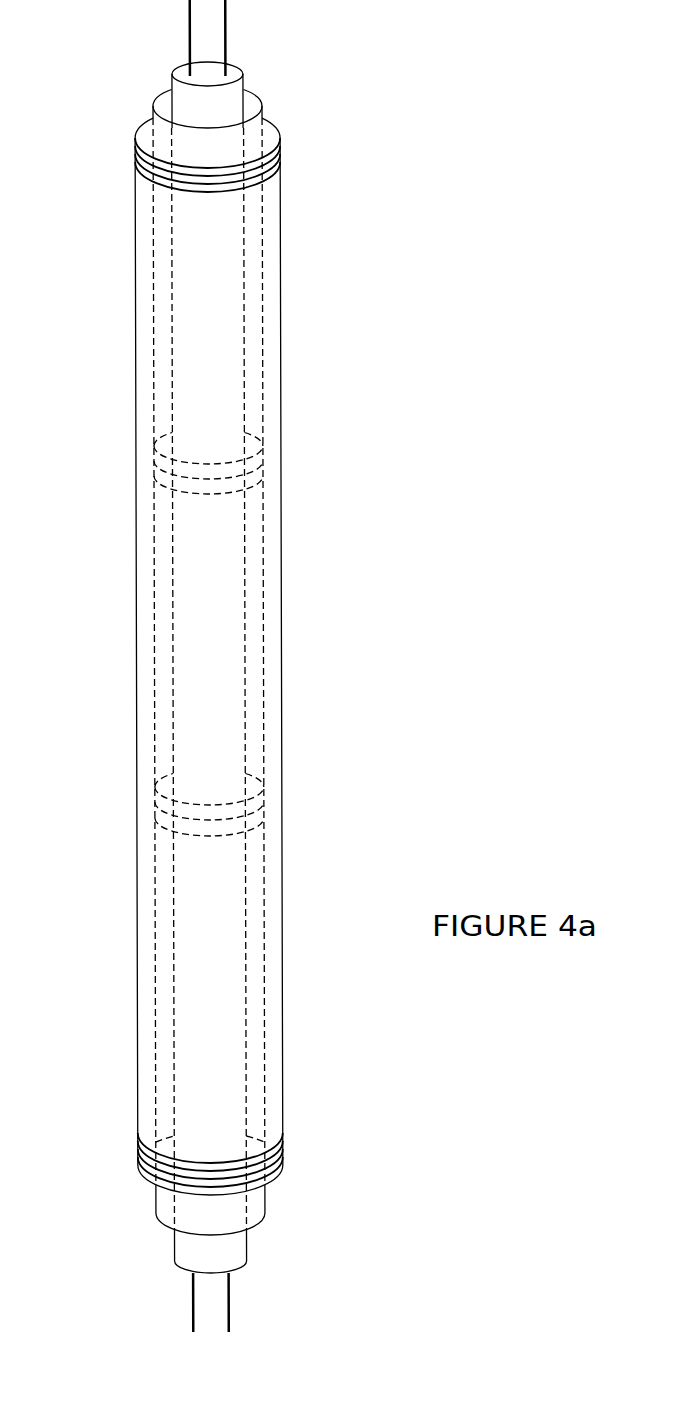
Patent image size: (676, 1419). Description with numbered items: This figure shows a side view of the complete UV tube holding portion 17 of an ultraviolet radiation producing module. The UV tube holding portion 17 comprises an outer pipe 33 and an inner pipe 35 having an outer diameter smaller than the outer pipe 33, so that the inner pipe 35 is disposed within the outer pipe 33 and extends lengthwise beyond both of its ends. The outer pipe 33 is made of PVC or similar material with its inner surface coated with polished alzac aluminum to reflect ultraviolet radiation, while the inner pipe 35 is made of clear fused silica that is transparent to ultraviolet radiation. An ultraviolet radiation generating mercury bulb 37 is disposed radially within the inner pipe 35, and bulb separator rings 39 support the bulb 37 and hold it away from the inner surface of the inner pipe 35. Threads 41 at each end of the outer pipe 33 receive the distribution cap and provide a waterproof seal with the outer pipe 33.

The UV tube holding portion 17 is at (297, 444).
The outer pipe 33 is at (282, 213).
The inner pipe 35 is at (277, 112).
The mercury bulb 37 is at (240, 65).
The bulb separator rings 39 is at (263, 800).
The threads 41 is at (130, 152).